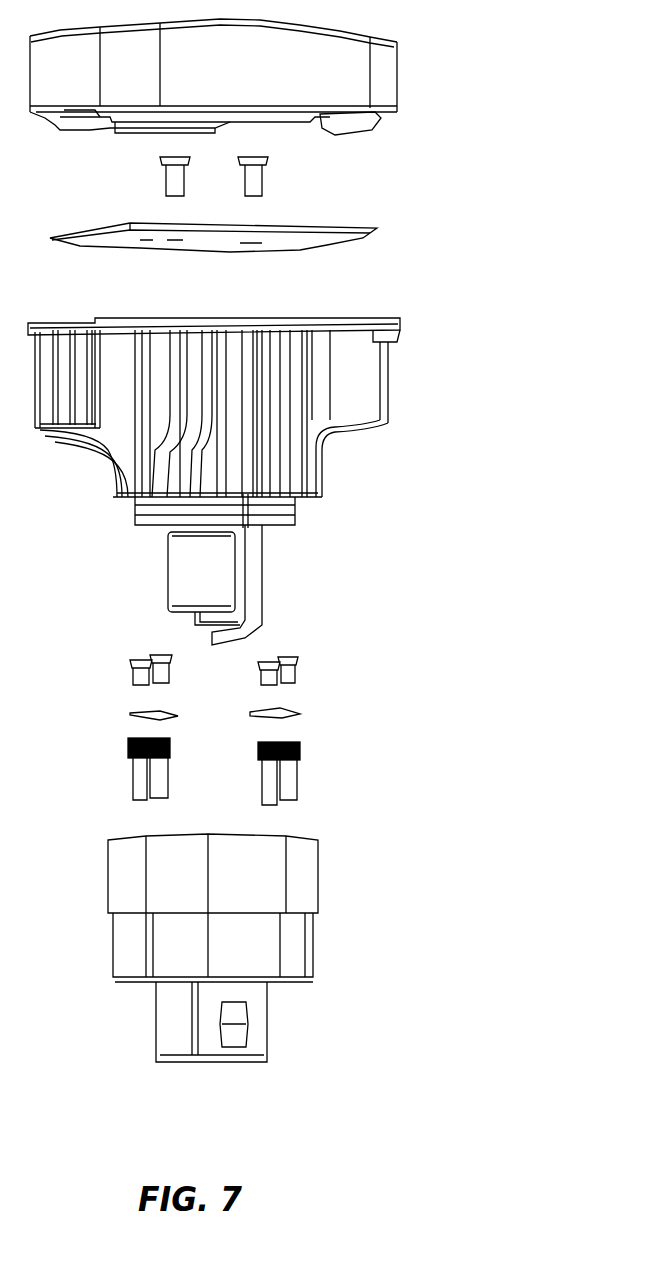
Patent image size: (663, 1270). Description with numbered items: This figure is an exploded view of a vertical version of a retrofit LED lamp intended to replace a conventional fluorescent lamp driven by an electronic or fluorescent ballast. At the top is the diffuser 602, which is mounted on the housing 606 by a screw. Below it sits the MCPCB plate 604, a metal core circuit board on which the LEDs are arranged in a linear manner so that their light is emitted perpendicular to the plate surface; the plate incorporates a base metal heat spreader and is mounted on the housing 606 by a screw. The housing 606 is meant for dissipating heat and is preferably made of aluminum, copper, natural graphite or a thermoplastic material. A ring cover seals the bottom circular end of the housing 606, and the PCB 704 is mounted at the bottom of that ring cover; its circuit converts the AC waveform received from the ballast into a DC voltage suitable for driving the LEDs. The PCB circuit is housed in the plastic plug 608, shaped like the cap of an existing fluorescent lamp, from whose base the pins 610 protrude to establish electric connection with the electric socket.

The diffuser 602 is at (398, 82).
The PCB 704 is at (263, 180).
The MCPCB plate 604 is at (380, 229).
The housing 606 is at (397, 361).
The pins 610 is at (300, 770).
The plastic plug 608 is at (303, 882).